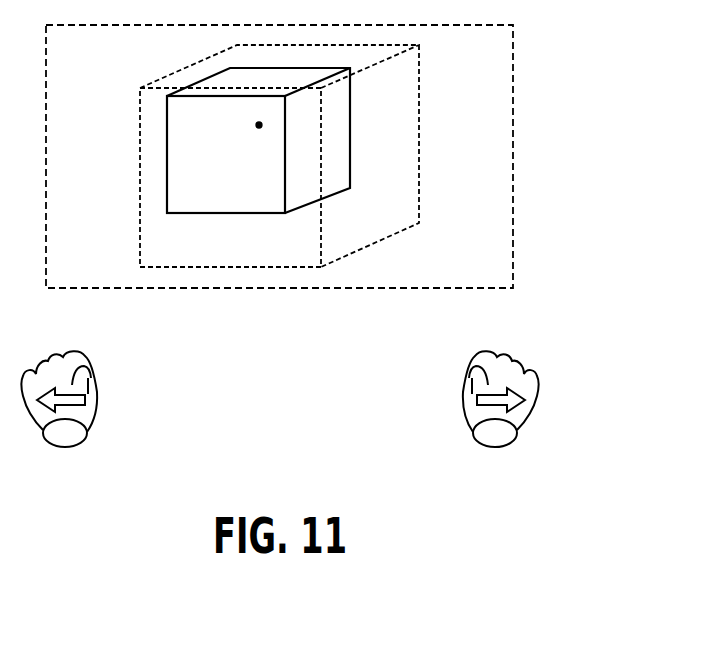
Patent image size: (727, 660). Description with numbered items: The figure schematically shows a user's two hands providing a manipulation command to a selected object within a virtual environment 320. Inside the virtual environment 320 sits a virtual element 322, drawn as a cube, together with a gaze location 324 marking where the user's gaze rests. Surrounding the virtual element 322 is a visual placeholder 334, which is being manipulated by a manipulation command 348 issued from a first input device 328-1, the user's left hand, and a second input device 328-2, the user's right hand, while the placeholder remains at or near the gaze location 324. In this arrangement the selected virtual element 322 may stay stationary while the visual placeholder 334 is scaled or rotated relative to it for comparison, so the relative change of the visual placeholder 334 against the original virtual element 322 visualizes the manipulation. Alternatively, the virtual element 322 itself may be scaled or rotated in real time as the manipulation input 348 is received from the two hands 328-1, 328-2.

The virtual environment 320 is at (101, 274).
The virtual element 322 is at (333, 132).
The gaze location 324 is at (259, 125).
The visual placeholder 334 is at (419, 87).
The first input device 328-1 is at (96, 414).
The second input device 328-2 is at (464, 414).
The manipulation command 348 is at (85, 366).